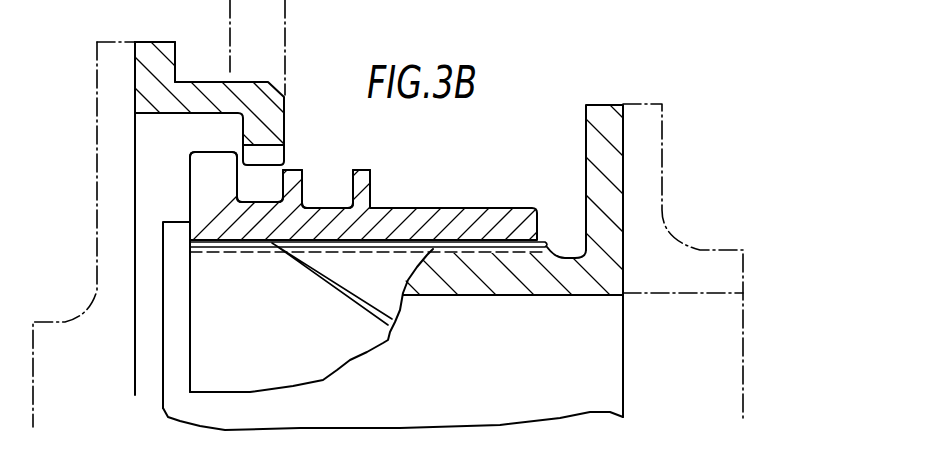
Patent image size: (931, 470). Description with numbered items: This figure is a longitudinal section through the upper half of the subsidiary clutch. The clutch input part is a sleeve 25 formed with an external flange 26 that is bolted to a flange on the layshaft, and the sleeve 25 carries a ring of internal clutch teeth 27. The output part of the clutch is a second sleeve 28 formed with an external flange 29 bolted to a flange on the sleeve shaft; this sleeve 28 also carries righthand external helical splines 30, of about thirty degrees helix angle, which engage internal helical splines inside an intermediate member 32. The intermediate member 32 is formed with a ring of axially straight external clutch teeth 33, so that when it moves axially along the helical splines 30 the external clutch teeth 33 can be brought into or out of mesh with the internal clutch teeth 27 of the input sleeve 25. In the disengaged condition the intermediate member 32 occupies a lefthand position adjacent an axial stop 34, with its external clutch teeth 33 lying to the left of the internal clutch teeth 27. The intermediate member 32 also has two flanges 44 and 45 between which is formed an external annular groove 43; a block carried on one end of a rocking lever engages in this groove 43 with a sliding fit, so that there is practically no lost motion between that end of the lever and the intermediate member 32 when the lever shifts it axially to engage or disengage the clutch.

The sleeve 25 is at (223, 88).
The external flange 26 is at (148, 55).
The internal clutch teeth 27 is at (275, 153).
The sleeve 28 is at (475, 282).
The external flange 29 is at (589, 133).
The external helical splines 30 is at (542, 245).
The intermediate member 32 is at (434, 212).
The external clutch teeth 33 is at (203, 157).
The axial stop 34 is at (172, 339).
The external annular groove 43 is at (322, 192).
The flange 44 is at (292, 176).
The flange 45 is at (359, 173).